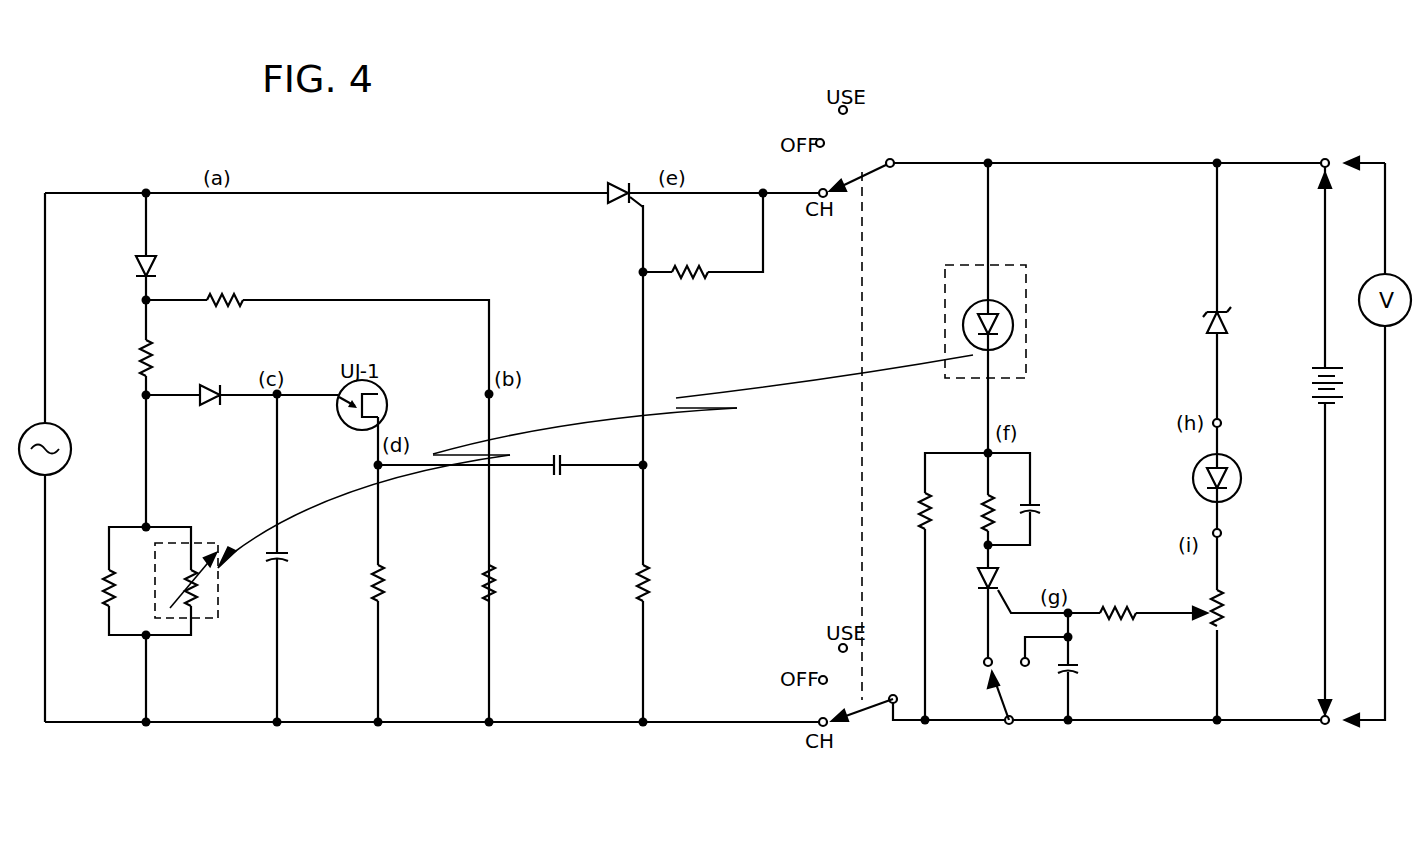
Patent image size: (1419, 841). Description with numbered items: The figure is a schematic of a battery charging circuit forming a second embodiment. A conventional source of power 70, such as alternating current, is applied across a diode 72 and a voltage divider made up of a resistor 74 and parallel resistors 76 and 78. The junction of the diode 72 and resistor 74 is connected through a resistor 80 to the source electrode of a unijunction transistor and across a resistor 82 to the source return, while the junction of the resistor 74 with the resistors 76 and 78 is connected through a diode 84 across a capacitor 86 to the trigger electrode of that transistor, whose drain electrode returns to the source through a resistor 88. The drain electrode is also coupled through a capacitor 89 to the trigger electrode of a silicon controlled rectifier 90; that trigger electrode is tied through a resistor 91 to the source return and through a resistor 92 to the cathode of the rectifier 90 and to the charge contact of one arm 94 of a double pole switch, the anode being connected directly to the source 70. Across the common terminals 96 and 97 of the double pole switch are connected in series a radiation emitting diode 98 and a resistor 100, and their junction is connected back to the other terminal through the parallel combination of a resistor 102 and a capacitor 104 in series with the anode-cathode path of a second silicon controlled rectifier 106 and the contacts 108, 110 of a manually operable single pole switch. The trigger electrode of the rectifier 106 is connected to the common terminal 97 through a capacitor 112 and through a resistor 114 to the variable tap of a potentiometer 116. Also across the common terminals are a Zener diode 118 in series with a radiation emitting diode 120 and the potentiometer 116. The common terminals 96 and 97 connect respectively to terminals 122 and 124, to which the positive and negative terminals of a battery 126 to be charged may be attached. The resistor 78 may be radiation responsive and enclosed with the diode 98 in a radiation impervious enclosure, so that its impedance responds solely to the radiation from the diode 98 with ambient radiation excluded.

The source of power 70 is at (40, 430).
The diode 72 is at (152, 266).
The resistor 74 is at (152, 353).
The resistor 76 is at (104, 574).
The resistor 78 is at (196, 610).
The resistor 80 is at (223, 294).
The resistor 82 is at (495, 582).
The diode 84 is at (208, 386).
The capacitor 86 is at (280, 562).
The resistor 88 is at (384, 582).
The capacitor 89 is at (562, 460).
The silicon controlled rectifier 90 is at (610, 182).
The resistor 91 is at (649, 580).
The resistor 92 is at (694, 266).
The arm of double pole switch 94 is at (858, 164).
The common terminal 96 is at (894, 159).
The common terminal 97 is at (894, 694).
The radiation emitting diode 98 is at (1013, 324).
The resistor 100 is at (920, 510).
The resistor 102 is at (984, 498).
The capacitor 104 is at (1036, 504).
The second silicon controlled rectifier 106 is at (996, 576).
The switch contact 108 is at (986, 660).
The switch contact 110 is at (1008, 724).
The capacitor 112 is at (1074, 664).
The resistor 114 is at (1118, 612).
The potentiometer 116 is at (1222, 596).
The Zener diode 118 is at (1226, 326).
The radiation emitting diode 120 is at (1195, 481).
The terminal 122 is at (1327, 159).
The terminal 124 is at (1322, 724).
The battery 126 is at (1313, 370).